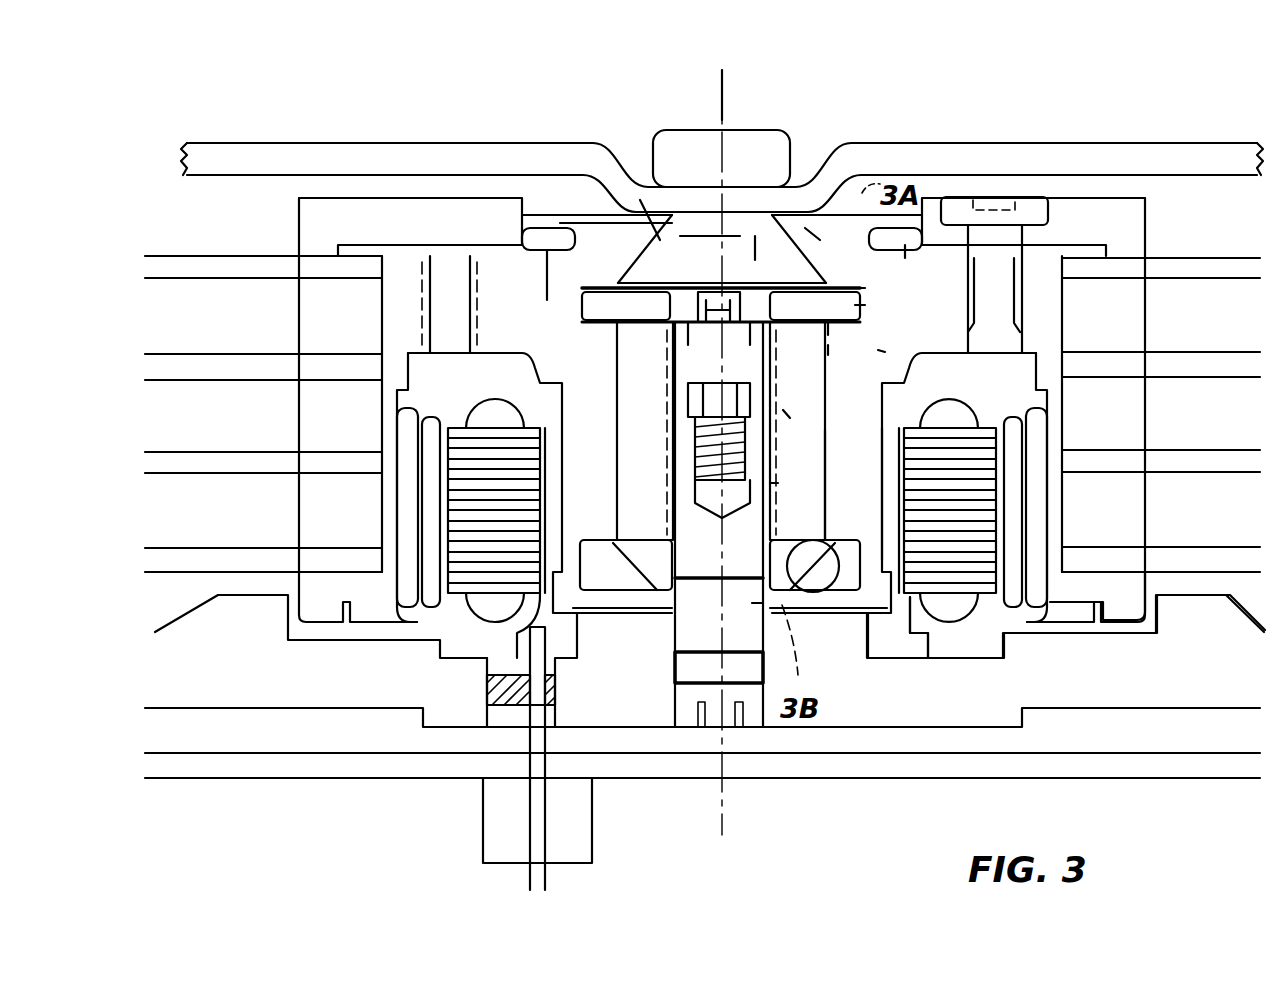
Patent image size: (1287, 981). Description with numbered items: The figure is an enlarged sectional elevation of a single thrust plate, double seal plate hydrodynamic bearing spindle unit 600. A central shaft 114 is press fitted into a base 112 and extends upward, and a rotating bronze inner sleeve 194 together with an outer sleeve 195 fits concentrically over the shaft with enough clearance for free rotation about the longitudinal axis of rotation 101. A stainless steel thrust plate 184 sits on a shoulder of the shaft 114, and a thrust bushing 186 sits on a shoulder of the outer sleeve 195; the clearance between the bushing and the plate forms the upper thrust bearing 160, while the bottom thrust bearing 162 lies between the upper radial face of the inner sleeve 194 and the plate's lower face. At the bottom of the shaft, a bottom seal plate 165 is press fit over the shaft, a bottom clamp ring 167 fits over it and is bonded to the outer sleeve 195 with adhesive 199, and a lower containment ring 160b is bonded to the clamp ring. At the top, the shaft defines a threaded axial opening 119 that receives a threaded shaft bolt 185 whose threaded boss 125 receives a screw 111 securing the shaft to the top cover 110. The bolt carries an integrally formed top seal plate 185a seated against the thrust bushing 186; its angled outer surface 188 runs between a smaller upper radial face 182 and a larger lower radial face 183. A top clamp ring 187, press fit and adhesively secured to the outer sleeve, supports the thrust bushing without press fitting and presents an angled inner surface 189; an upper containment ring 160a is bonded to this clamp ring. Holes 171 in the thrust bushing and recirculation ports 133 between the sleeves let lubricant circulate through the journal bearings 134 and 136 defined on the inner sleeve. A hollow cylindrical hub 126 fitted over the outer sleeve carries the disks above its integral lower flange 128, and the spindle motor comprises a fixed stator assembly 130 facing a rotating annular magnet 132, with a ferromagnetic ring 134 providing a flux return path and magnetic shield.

The longitudinal axis of rotation 101 is at (731, 85).
The top cover 110 is at (1088, 152).
The screw 111 is at (702, 177).
The base 112 is at (927, 713).
The central shaft 114 is at (768, 550).
The threaded axial opening 119 is at (696, 487).
The threaded boss 125 is at (650, 236).
The hollow cylindrical hub 126 is at (945, 335).
The integral lower flange 128 is at (1073, 590).
The stator assembly 130 is at (935, 420).
The annular magnet 132 is at (1020, 416).
The recirculation ports 133 is at (826, 432).
The annular ferromagnetic ring 134 is at (790, 413).
The journal bearing 136 is at (778, 483).
The upper thrust bearing 160 is at (836, 331).
The upper containment ring 160a is at (592, 242).
The lower containment ring 160b is at (848, 618).
The bottom thrust bearing 162 is at (836, 352).
The bottom seal plate 165 is at (752, 603).
The bottom clamp ring 167 is at (857, 600).
The holes 171 is at (860, 287).
The upper radial face 182 is at (808, 228).
The lower radial face 183 is at (682, 236).
The thrust plate 184 is at (795, 348).
The threaded shaft bolt 185 is at (702, 385).
The top seal plate 185a is at (690, 278).
The thrust bushing 186 is at (862, 305).
The top clamp ring 187 is at (572, 278).
The outer surface 188 is at (755, 236).
The inner surface 189 is at (832, 245).
The inner sleeve 194 is at (822, 475).
The outer sleeve 195 is at (880, 475).
The adhesive 199 is at (878, 350).
The HDB spindle unit 600 is at (1004, 82).